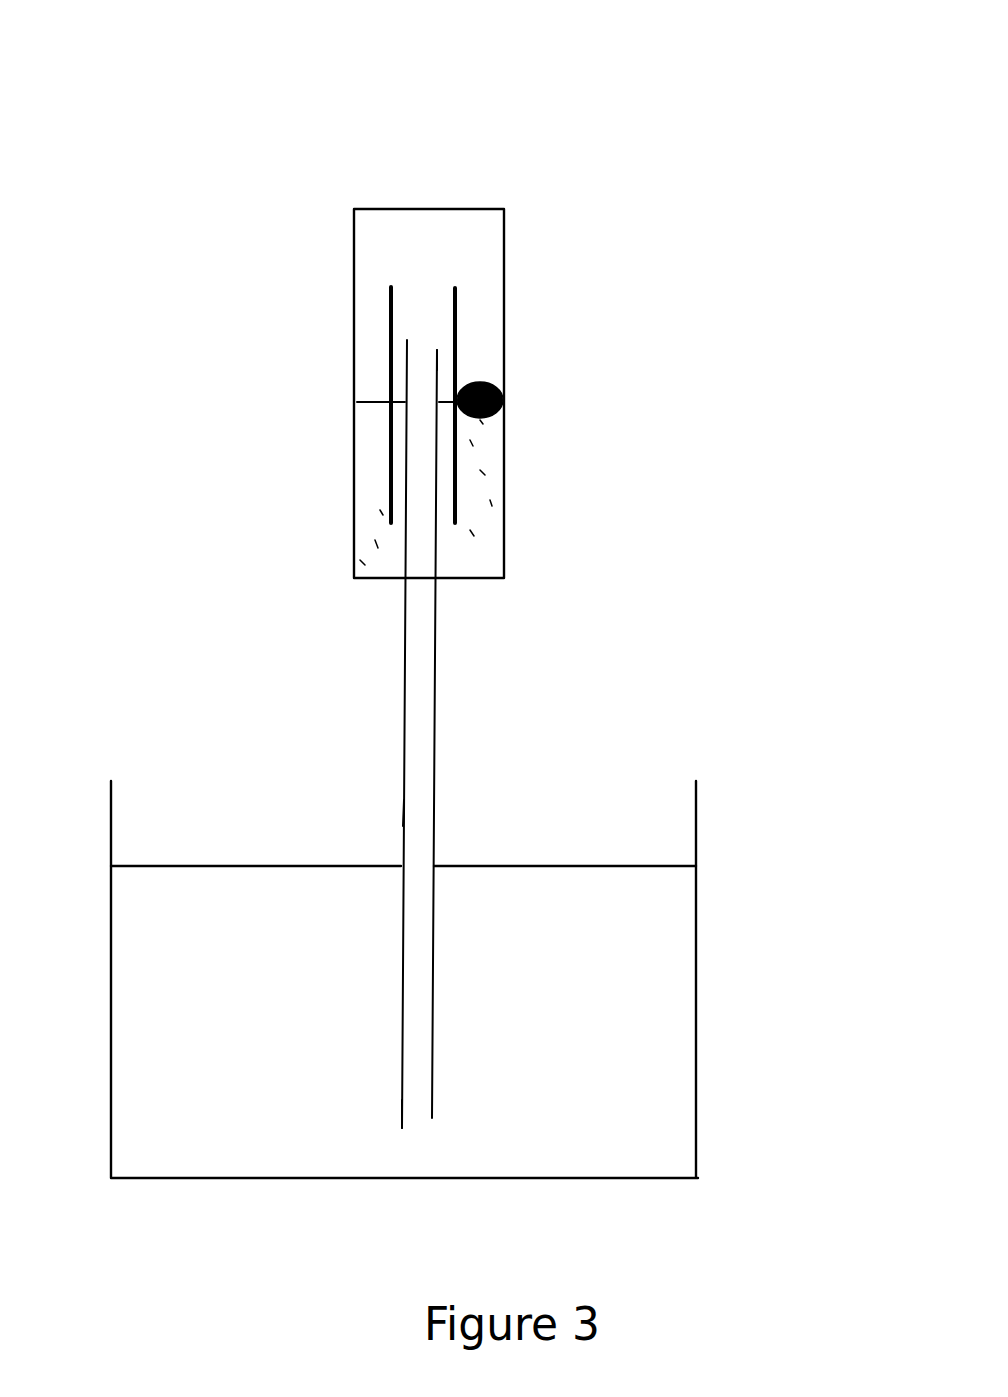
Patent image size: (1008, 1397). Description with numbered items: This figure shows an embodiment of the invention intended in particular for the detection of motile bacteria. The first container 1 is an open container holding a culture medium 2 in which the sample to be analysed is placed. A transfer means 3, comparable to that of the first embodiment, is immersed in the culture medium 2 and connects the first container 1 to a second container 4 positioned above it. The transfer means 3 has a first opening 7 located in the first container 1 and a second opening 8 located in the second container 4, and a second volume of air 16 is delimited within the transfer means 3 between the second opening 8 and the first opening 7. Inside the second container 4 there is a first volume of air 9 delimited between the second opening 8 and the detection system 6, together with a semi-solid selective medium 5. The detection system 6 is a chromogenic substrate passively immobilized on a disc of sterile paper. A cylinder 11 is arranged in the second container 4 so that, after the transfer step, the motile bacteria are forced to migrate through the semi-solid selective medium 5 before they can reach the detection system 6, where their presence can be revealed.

The first container 1 is at (706, 1090).
The culture medium 2 is at (645, 1152).
The transfer means 3 is at (437, 737).
The second container 4 is at (341, 520).
The semi-solid selective medium 5 is at (485, 552).
The detection system 6 is at (514, 400).
The first opening 7 is at (420, 1120).
The second opening 8 is at (434, 350).
The first volume of air 9 is at (428, 281).
The cylinder 11 is at (385, 383).
The second volume of air 16 is at (424, 813).